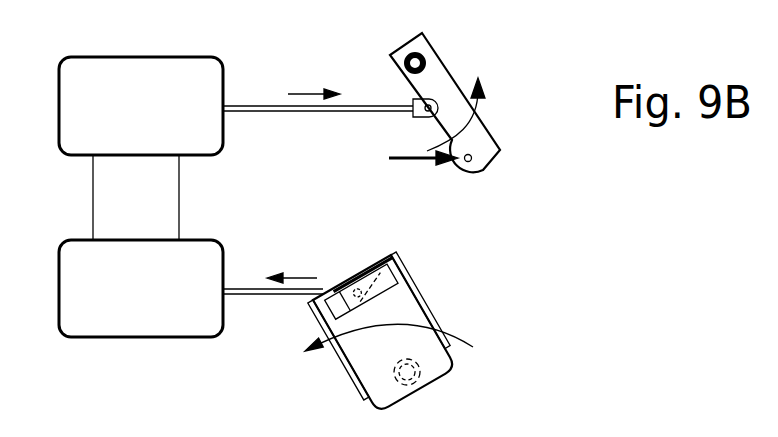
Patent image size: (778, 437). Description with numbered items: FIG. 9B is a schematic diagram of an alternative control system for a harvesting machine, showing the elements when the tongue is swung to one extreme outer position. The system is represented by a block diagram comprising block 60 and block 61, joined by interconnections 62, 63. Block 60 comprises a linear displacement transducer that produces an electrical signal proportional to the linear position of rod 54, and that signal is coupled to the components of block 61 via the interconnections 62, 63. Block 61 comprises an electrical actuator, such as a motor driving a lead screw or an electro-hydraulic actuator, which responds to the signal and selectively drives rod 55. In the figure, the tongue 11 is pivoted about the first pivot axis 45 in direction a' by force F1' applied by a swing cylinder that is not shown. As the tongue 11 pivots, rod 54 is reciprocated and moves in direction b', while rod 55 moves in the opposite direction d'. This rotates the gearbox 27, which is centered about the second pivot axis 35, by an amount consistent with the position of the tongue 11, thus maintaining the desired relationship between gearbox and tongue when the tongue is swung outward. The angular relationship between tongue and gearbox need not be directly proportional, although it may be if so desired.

The block 60 is at (141, 106).
The block 61 is at (141, 288).
The interconnection 62 is at (93, 210).
The interconnection 63 is at (179, 210).
The rod 54 is at (345, 111).
The rod 55 is at (280, 296).
The first pivot axis 45 is at (428, 60).
The tongue 11 is at (483, 133).
The gearbox 27 is at (452, 367).
The second pivot axis 35 is at (395, 381).
The direction a' is at (484, 114).
The direction b' is at (314, 76).
The direction d' is at (312, 263).
The force F1' is at (403, 179).